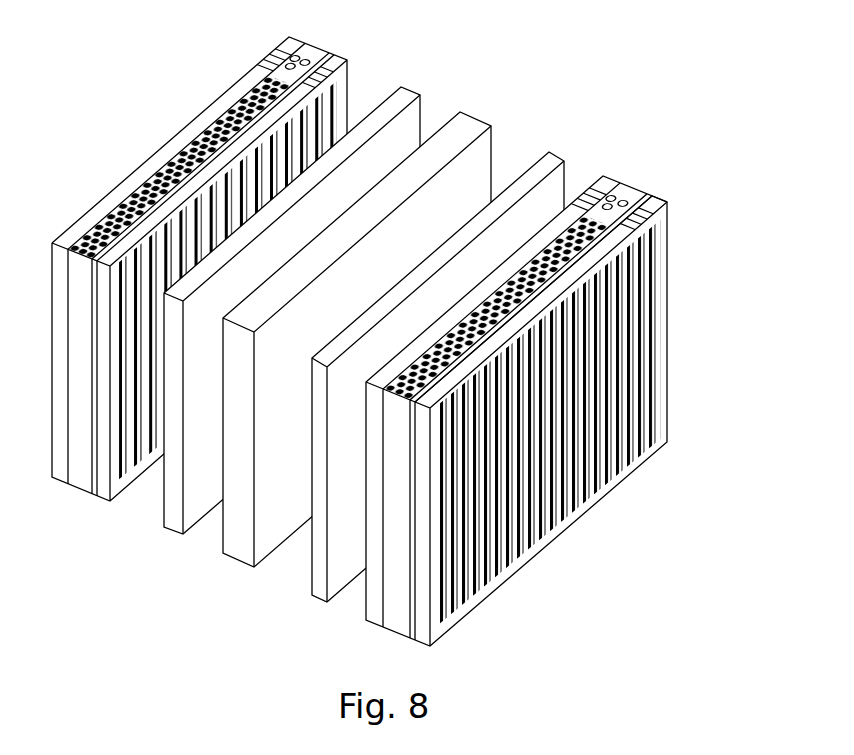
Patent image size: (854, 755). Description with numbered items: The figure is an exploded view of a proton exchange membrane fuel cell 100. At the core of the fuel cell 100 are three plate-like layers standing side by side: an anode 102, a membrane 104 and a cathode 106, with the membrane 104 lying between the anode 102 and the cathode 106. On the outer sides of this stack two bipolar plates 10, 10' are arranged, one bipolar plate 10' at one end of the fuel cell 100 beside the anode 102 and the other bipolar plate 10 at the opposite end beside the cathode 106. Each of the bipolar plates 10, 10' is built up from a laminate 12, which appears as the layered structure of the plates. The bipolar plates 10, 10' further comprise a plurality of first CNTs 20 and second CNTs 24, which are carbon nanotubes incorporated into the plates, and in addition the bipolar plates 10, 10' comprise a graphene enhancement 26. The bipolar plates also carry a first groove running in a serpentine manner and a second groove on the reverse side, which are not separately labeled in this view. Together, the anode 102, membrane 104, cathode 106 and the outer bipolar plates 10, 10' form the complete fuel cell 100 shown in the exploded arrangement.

The proton membrane fuel cell 100 is at (426, 660).
The bipolar plate 10 is at (587, 334).
The bipolar plate 10' is at (185, 269).
The laminate 12 is at (607, 497).
The first CNTs 20 is at (541, 302).
The second CNTs 24 is at (612, 209).
The graphene enhancement 26 is at (613, 204).
The anode 102 is at (413, 87).
The membrane 104 is at (483, 117).
The cathode 106 is at (562, 152).